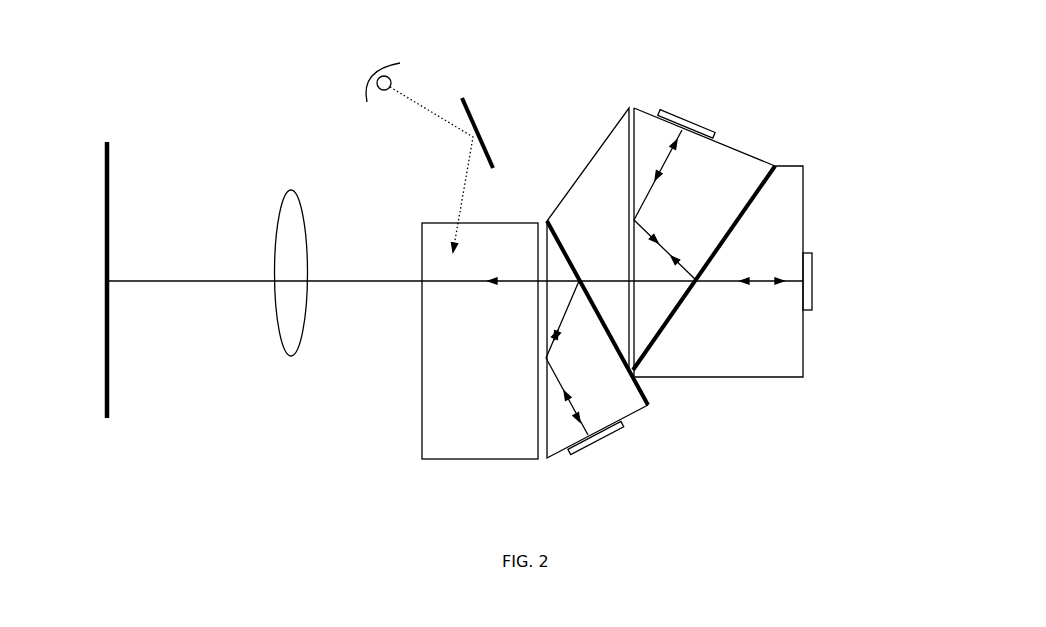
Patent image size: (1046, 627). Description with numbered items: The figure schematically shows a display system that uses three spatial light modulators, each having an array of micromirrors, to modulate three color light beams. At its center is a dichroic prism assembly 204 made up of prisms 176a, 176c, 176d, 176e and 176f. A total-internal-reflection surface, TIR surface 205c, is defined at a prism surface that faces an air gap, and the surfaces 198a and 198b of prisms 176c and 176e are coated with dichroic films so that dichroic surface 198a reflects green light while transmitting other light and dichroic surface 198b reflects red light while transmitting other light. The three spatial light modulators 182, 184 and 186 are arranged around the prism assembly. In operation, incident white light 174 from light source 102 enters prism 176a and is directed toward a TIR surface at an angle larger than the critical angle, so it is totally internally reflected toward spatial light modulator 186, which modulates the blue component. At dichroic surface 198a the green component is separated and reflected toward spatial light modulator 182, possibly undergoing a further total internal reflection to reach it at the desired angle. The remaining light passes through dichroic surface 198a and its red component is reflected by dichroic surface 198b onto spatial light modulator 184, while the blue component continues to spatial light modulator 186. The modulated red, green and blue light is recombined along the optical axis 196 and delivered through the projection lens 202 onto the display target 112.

The display target 112 is at (108, 162).
The projection lens 202 is at (292, 192).
The optical axis 196 is at (389, 276).
The light source 102 is at (400, 51).
The incident white light 174 is at (430, 138).
The prism 176a is at (422, 370).
The prism 176c is at (633, 410).
The prism 176d is at (618, 215).
The prism 176e is at (749, 183).
The prism 176f is at (780, 368).
The spatial light modulator 182 is at (628, 461).
The spatial light modulator 184 is at (706, 108).
The spatial light modulator 186 is at (853, 293).
The dichroic surface 198a is at (650, 398).
The dichroic surface 198b is at (776, 175).
The dichroic prism assembly 204 is at (616, 125).
The TIR surface 205c is at (638, 110).